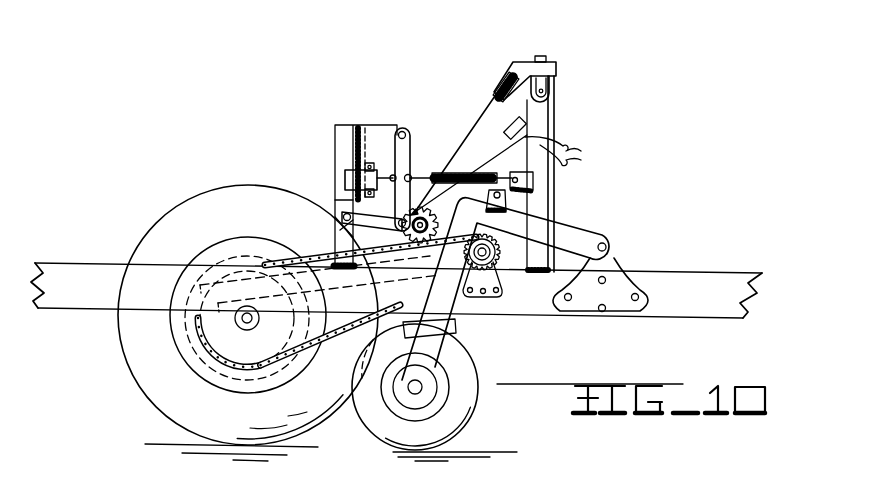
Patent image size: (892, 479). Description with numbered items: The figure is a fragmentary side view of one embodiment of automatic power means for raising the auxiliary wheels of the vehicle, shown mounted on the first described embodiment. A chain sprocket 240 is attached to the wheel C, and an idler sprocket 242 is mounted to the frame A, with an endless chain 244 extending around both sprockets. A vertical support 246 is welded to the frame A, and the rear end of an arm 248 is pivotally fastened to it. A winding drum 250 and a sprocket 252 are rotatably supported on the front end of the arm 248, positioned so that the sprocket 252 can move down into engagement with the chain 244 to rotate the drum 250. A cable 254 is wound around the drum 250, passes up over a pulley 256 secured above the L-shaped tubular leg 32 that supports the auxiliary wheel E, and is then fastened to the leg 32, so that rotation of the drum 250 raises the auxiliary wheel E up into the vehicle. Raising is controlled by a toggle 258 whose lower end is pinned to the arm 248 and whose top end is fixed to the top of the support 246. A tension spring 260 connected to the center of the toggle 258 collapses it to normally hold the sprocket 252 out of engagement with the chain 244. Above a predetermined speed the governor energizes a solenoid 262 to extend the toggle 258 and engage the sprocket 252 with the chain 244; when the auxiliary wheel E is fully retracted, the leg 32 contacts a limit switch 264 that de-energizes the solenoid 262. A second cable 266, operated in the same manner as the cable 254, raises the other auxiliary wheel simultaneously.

The L-shaped tubular leg 32 is at (577, 228).
The chain sprocket 240 is at (250, 345).
The idler sprocket 242 is at (510, 263).
The endless chain 244 is at (303, 237).
The vertical support 246 is at (340, 150).
The arm 248 is at (333, 217).
The winding drum 250 is at (408, 270).
The sprocket 252 is at (416, 208).
The cable 254 is at (542, 120).
The pulley 256 is at (552, 93).
The toggle 258 is at (365, 172).
The tension spring 260 is at (473, 173).
The solenoid 262 is at (357, 180).
The limit switch 264 is at (529, 136).
The second cable 266 is at (482, 115).
The frame A is at (690, 266).
The wheel C is at (217, 318).
The auxiliary wheel E is at (480, 357).